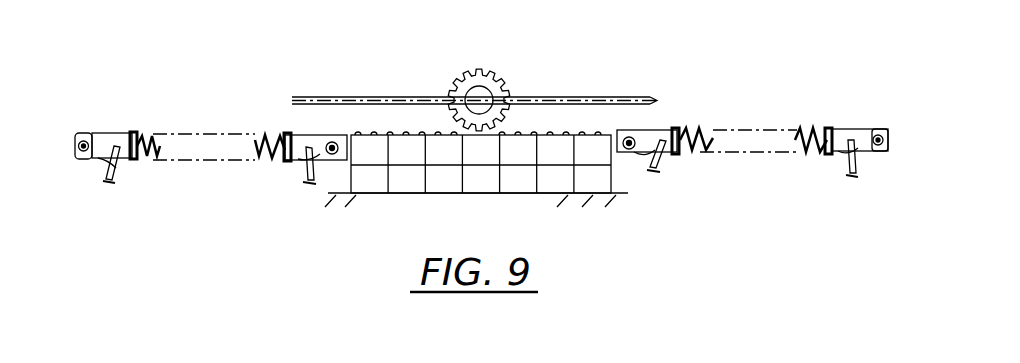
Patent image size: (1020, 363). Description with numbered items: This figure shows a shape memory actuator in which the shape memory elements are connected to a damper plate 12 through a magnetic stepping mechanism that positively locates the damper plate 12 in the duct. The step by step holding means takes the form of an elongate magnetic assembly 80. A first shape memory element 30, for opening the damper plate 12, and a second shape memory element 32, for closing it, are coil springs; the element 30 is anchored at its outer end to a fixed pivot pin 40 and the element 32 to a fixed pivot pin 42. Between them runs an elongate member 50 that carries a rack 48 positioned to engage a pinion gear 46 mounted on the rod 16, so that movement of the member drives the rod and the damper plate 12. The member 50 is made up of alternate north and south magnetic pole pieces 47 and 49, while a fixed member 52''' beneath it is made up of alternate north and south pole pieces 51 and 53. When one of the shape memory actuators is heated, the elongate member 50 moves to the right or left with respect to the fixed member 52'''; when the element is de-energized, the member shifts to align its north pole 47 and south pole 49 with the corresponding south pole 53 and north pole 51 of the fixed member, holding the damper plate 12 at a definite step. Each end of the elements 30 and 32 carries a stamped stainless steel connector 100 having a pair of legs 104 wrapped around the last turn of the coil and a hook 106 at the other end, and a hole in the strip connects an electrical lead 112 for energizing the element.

The damper plate 12 is at (636, 97).
The rod 16 is at (475, 96).
The shape memory element 30 is at (263, 134).
The shape memory element 32 is at (714, 128).
The fixed pivot pin 40 is at (85, 134).
The fixed pivot pin 42 is at (877, 135).
The pinion gear 46 is at (492, 72).
The north magnetic pole pieces 47 is at (440, 133).
The rack 48 is at (536, 131).
The south magnetic pole pieces 49 is at (552, 133).
The elongate member 50 is at (363, 133).
The north pole pieces 51 is at (474, 195).
The fixed member 52''' is at (474, 193).
The south pole pieces 53 is at (507, 194).
The elongate magnetic assembly 80 is at (644, 192).
The connector 100 is at (104, 132).
The legs 104 is at (132, 133).
The hook 106 is at (100, 153).
The electrical lead 112 is at (120, 178).